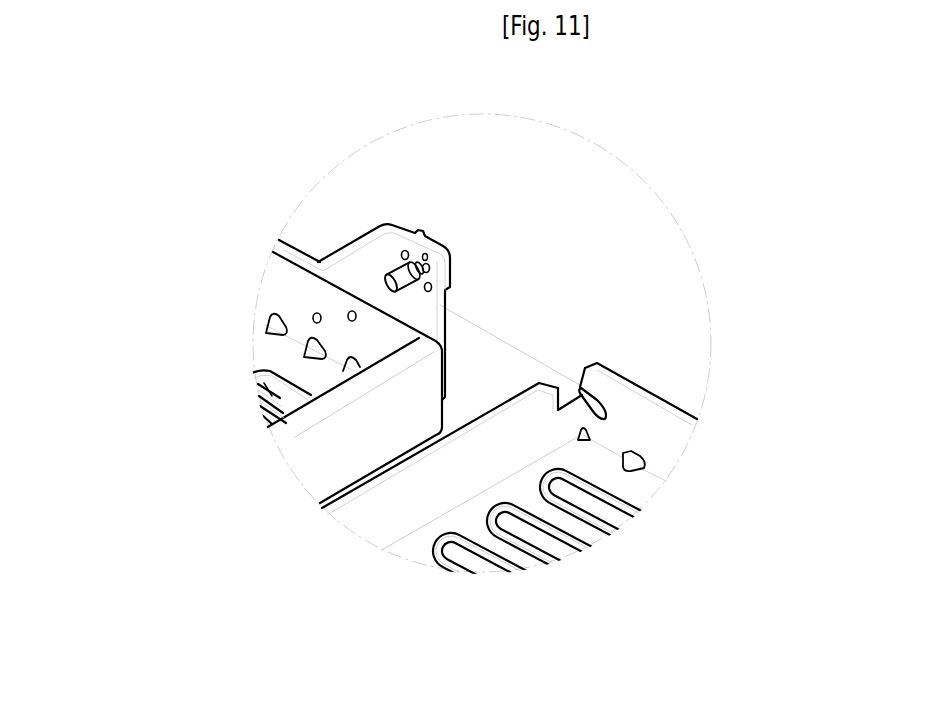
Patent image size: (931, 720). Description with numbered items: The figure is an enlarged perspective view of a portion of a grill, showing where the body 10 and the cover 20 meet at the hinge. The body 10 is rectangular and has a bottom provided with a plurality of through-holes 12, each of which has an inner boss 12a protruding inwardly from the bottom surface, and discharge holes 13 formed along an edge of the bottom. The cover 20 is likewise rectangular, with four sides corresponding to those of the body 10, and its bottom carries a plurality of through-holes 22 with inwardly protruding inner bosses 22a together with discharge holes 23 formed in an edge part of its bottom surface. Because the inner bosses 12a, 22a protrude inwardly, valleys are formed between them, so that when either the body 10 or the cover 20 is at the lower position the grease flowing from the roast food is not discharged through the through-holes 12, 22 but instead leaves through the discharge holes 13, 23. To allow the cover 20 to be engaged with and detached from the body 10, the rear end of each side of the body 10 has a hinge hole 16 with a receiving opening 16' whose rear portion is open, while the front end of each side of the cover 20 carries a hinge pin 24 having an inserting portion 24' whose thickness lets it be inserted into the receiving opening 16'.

The body 10 is at (363, 521).
The through-holes 12 is at (480, 560).
The inner boss 12a is at (457, 568).
The discharge holes 13 is at (630, 467).
The hinge hole 16 is at (565, 439).
The receiving opening 16' is at (636, 270).
The cover 20 is at (290, 428).
The through-holes 22 is at (258, 373).
The inner boss 22a is at (256, 366).
The discharge holes 23 is at (268, 322).
The hinge pin 24 is at (348, 204).
The inserting portion 24' is at (412, 159).